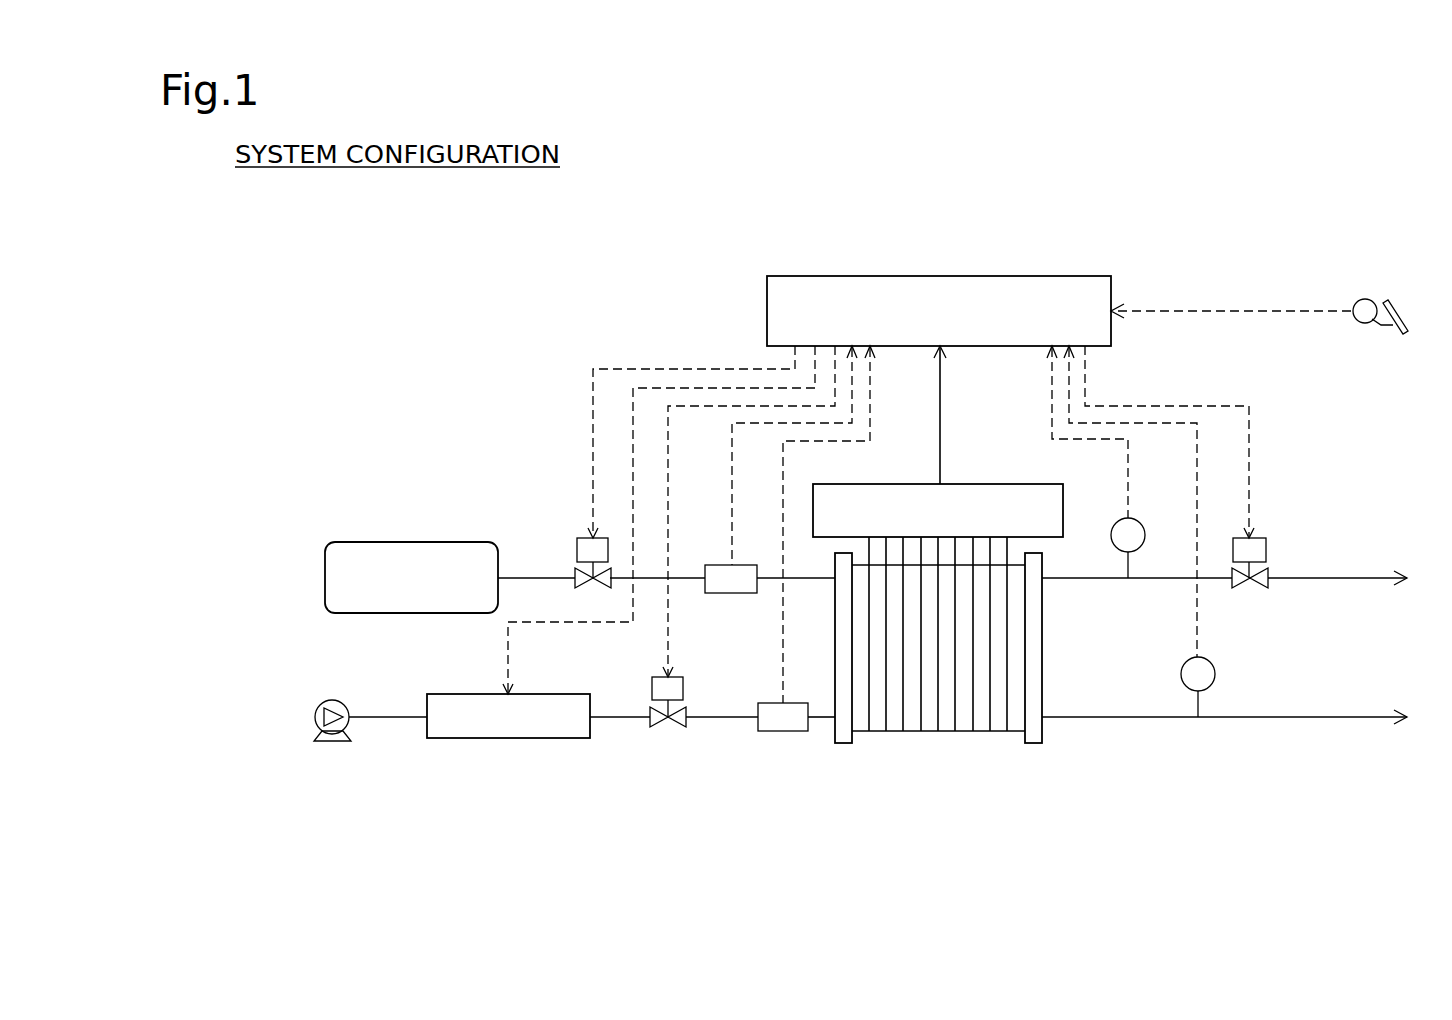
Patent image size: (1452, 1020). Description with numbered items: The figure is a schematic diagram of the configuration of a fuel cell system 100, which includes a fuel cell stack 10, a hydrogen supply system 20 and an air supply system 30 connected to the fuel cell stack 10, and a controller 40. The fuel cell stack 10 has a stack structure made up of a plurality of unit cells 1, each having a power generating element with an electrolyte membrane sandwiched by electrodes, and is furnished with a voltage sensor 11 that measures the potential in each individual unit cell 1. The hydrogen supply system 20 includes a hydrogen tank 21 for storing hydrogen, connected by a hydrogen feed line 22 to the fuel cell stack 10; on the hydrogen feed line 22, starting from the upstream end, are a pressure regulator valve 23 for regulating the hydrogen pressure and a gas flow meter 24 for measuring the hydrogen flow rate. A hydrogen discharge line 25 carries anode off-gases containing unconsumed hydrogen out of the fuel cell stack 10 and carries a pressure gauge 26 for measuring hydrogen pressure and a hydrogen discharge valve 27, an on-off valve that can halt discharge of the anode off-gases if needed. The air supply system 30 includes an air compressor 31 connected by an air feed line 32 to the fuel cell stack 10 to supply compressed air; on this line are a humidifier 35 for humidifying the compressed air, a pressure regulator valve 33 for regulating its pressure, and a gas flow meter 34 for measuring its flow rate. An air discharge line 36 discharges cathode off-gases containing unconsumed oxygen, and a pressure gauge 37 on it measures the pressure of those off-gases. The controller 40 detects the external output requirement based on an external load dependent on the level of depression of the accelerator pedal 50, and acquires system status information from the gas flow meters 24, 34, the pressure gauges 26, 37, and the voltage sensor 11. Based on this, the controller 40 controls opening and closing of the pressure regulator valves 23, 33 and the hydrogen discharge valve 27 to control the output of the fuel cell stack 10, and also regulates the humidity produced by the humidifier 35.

The unit cell 1 is at (880, 722).
The fuel cell stack 10 is at (938, 588).
The voltage sensor 11 is at (988, 484).
The hydrogen supply system 20 is at (300, 585).
The hydrogen tank 21 is at (405, 542).
The hydrogen feed line 22 is at (535, 578).
The pressure regulator valve 23 is at (578, 540).
The gas flow meter 24 is at (705, 565).
The hydrogen discharge line 25 is at (1078, 578).
The pressure gauge 26 is at (1141, 522).
The hydrogen discharge valve 27 is at (1266, 542).
The air supply system 30 is at (240, 710).
The air compressor 31 is at (316, 708).
The air feed line 32 is at (388, 717).
The pressure regulator valve 33 is at (652, 685).
The gas flow meter 34 is at (758, 705).
The humidifier 35 is at (450, 694).
The air discharge line 36 is at (1082, 717).
The pressure gauge 37 is at (1212, 662).
The controller 40 is at (883, 276).
The accelerator pedal 50 is at (1405, 318).
The fuel cell system 100 is at (1202, 208).